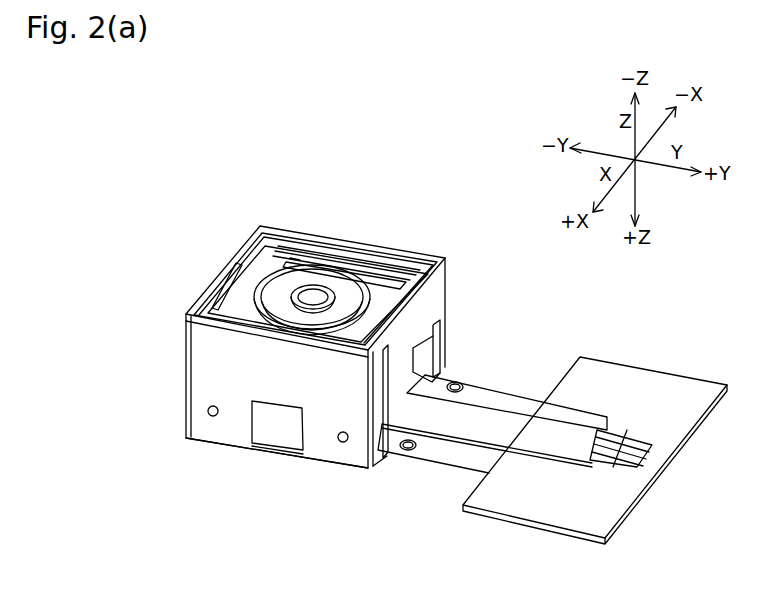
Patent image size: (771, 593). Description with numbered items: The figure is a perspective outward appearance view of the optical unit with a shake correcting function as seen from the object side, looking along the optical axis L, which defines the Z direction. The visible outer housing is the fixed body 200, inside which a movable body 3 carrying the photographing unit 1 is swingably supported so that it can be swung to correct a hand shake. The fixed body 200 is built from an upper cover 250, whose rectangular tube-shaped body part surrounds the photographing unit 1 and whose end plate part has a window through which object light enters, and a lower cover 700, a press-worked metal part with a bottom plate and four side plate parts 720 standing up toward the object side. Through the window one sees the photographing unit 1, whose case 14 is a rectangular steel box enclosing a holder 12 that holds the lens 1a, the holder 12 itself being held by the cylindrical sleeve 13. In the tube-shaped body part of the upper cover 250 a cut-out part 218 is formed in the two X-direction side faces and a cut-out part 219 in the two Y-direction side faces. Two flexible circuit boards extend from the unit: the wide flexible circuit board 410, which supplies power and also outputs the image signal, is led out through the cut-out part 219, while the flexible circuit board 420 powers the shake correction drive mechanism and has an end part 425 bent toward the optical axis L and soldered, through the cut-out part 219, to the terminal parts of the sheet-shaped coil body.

The photographing unit 1 is at (335, 316).
The lens 1a is at (298, 290).
The movable body 3 is at (227, 292).
The holder 12 is at (343, 290).
The sleeve 13 is at (337, 268).
The case 14 is at (388, 275).
The fixed body 200 is at (332, 335).
The cut-out part 218 is at (304, 438).
The cut-out part 219 is at (443, 322).
The upper cover 250 is at (217, 428).
The flexible circuit board 410 is at (622, 384).
The flexible circuit board 420 is at (513, 425).
The end part 425 is at (433, 365).
The lower cover 700 is at (280, 432).
The side plate part 720 is at (254, 470).
The optical axis L is at (315, 300).